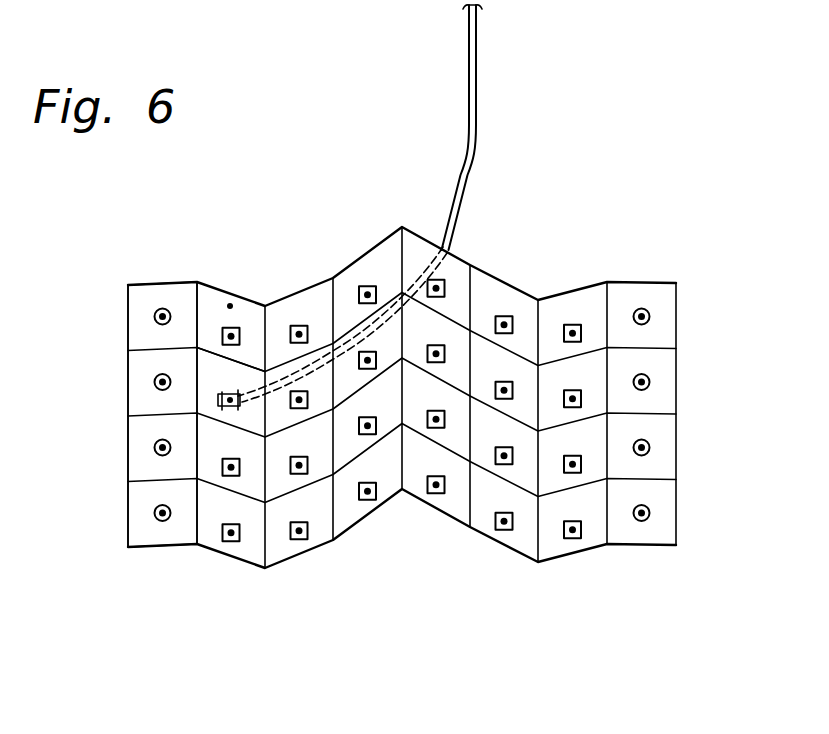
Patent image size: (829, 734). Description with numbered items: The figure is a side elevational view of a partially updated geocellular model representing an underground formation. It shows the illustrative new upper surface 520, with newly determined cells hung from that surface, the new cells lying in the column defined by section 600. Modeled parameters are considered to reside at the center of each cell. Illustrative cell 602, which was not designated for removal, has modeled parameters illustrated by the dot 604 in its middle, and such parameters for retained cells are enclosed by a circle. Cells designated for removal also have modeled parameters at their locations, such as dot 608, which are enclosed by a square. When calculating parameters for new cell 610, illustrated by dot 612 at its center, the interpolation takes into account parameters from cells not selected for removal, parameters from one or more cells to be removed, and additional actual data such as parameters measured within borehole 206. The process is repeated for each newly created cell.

The borehole 206 is at (478, 68).
The new upper surface 520 is at (502, 277).
The section 600 is at (607, 575).
The cell 602 is at (142, 333).
The dot 604 is at (160, 315).
The dot 608 is at (228, 333).
The new cell 610 is at (215, 345).
The dot 612 is at (231, 305).